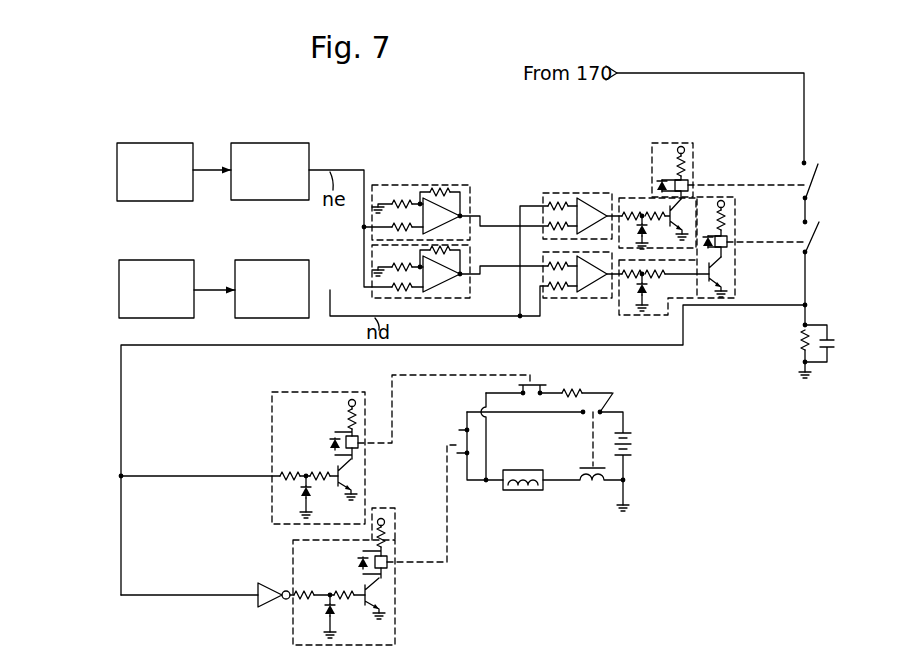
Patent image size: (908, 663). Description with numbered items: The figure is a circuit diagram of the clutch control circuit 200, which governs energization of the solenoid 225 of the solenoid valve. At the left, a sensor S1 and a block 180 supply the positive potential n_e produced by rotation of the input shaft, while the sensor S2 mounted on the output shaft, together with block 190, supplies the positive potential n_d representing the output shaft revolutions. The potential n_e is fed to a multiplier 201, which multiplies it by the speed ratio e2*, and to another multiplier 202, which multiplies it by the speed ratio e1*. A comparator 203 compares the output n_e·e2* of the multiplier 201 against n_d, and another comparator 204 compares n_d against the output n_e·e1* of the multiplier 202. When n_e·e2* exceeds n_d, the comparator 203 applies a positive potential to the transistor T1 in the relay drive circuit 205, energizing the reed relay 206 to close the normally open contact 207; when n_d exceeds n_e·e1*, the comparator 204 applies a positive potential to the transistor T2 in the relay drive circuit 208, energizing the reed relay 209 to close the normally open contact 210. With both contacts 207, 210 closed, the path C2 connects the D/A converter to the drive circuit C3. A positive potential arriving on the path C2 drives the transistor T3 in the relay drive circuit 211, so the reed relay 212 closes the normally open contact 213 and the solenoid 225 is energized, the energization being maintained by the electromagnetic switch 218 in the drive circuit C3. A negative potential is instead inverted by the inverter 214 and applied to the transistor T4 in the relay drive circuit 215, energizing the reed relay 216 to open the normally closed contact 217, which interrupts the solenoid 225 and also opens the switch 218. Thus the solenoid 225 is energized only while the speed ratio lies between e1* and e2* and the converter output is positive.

The first sensor S1 is at (155, 143).
The sensor S2 is at (155, 260).
The engine speed signal circuit 180 is at (262, 143).
The vehicle speed signal circuit 190 is at (266, 260).
The clutch control circuit 200 is at (384, 152).
The multiplier 201 is at (432, 185).
The multiplier 202 is at (470, 298).
The comparator 203 is at (602, 193).
The comparator 204 is at (577, 298).
The relay drive circuit 205 is at (702, 152).
The reed relay 206 is at (691, 183).
The normally open contact 207 is at (818, 170).
The relay drive circuit 208 is at (703, 286).
The reed relay 209 is at (733, 243).
The normally open contact 210 is at (822, 229).
The relay drive circuit 211 is at (344, 439).
The reed relay 212 is at (358, 447).
The normally open contact 213 is at (542, 385).
The inverter 214 is at (270, 583).
The relay drive circuit 215 is at (375, 545).
The reed relay 216 is at (390, 558).
The normally closed contact 217 is at (462, 436).
The electromagnetic switch 218 is at (591, 430).
The solenoid 225 is at (532, 490).
The transistor T1 is at (657, 224).
The transistor T2 is at (704, 281).
The transistor T3 is at (337, 487).
The transistor T4 is at (364, 605).
The path C2 is at (121, 422).
The drive circuit C3 is at (626, 408).